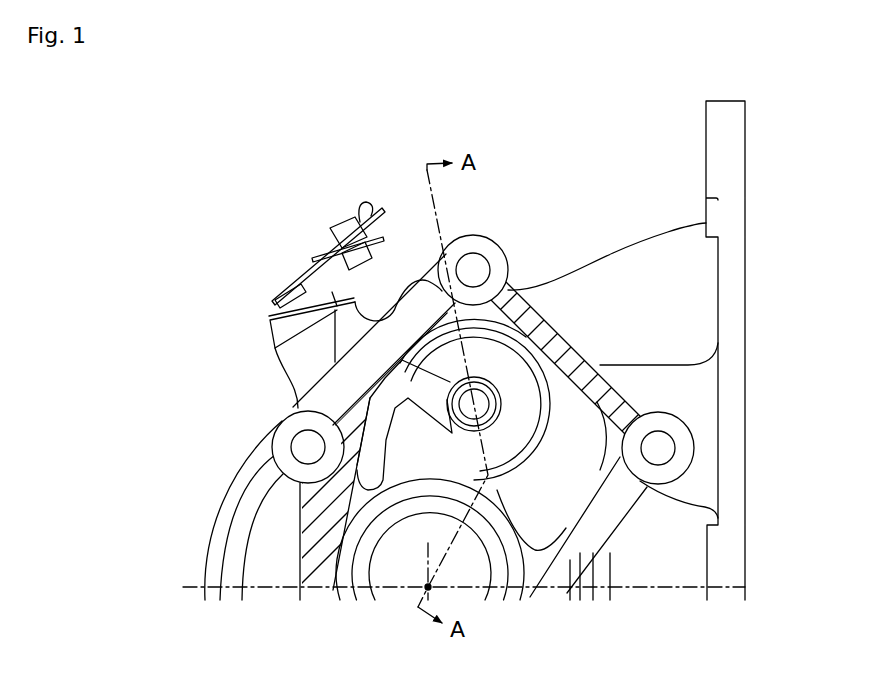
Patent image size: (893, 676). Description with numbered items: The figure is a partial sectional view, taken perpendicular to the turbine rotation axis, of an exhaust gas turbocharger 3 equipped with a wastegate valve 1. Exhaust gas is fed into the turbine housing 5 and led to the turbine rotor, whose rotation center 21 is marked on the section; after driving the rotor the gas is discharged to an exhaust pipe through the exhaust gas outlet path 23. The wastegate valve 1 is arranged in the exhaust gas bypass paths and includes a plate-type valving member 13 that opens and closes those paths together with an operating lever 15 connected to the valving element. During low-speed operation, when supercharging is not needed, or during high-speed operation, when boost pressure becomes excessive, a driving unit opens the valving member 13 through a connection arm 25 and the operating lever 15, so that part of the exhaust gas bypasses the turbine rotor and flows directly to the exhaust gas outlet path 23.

The wastegate valve 1 is at (533, 453).
The exhaust gas turbocharger 3 is at (190, 330).
The turbine housing 5 is at (617, 252).
The valving member 13 is at (508, 357).
The operating lever 15 is at (382, 490).
The rotation center of the turbine rotor 21 is at (426, 589).
The exhaust gas outlet path 23 is at (540, 527).
The connection arm 25 is at (325, 282).